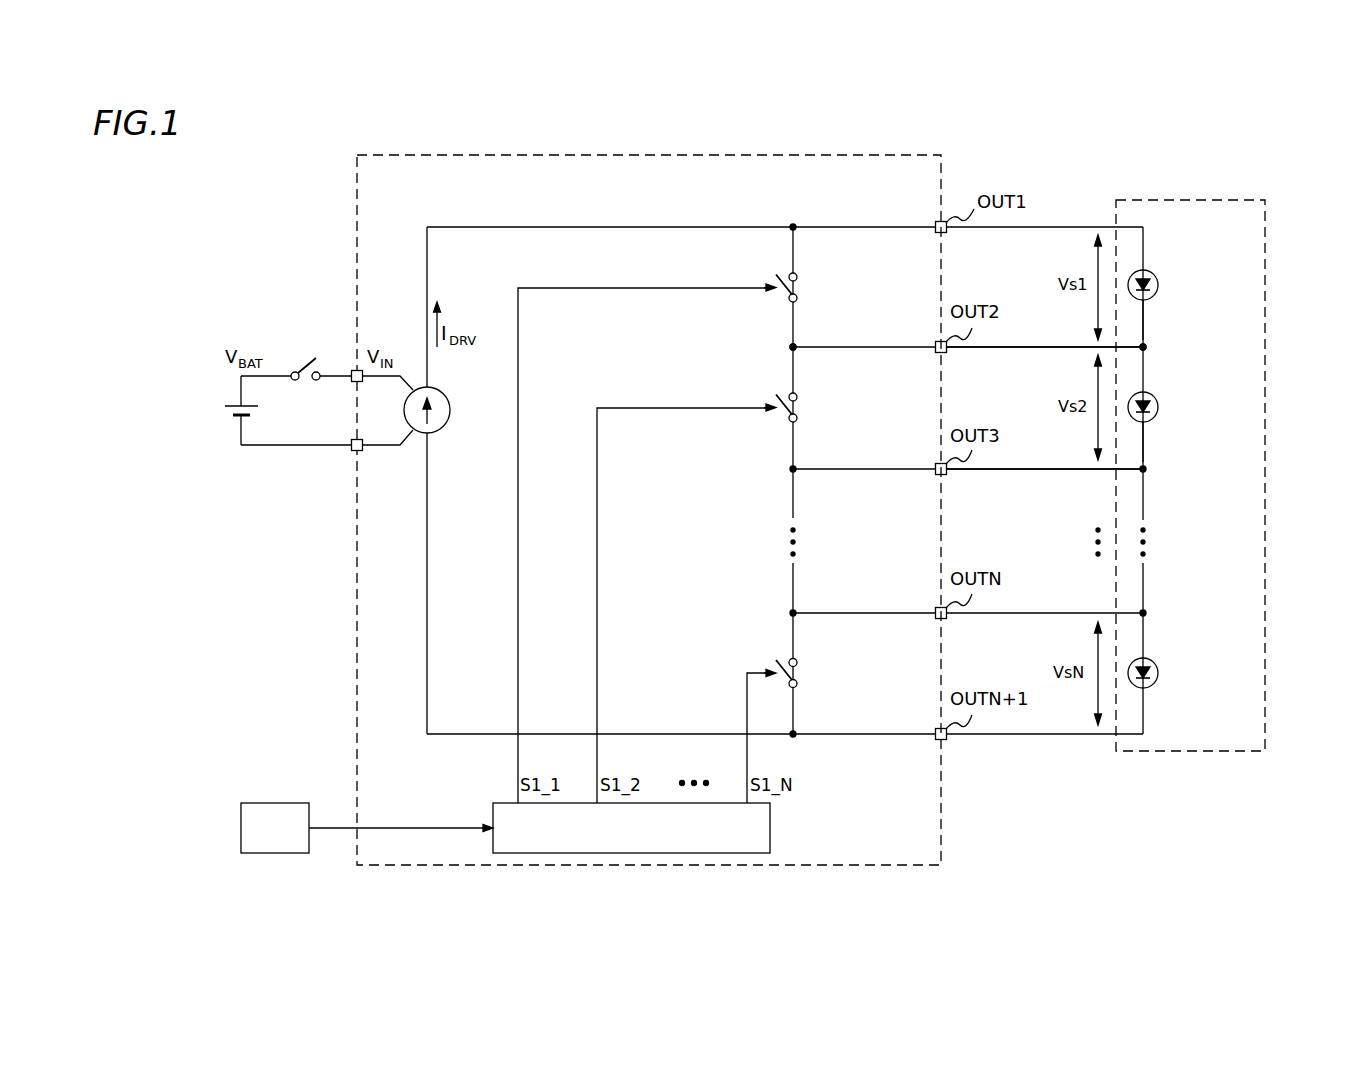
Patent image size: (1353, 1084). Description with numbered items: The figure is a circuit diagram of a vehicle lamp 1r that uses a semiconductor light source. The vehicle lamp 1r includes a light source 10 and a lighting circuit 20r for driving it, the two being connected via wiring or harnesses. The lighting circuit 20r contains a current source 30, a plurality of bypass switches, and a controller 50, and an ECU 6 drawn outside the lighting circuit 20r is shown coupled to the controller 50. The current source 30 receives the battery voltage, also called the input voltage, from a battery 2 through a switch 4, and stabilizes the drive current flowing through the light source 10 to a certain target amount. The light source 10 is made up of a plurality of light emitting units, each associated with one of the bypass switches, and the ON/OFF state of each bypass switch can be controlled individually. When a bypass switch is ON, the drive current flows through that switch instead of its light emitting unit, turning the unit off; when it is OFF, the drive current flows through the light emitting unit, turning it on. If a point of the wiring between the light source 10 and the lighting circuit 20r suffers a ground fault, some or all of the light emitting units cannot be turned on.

The vehicle lamp 1r is at (1223, 181).
The battery 2 is at (224, 412).
The switch 4 is at (300, 352).
The ECU 6 is at (278, 803).
The light source 10 is at (1266, 236).
The lighting circuit 20r is at (680, 866).
The current source 30 is at (440, 432).
The controller 50 is at (772, 825).